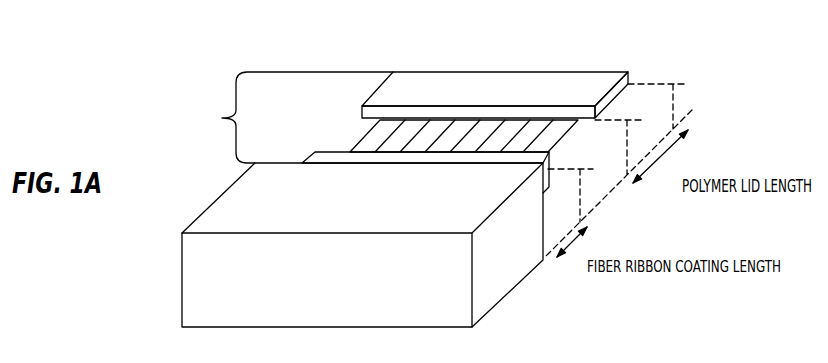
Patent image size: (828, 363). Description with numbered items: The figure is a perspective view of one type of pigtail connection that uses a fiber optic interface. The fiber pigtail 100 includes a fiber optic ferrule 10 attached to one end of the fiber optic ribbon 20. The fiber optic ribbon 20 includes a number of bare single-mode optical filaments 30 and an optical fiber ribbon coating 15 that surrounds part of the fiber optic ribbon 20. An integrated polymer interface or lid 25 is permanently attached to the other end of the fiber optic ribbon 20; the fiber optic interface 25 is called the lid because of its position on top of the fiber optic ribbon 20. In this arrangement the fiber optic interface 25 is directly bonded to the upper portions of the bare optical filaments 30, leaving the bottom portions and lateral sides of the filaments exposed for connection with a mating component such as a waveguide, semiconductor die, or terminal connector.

The fiber pigtail 100 is at (193, 81).
The fiber optic ferrule 10 is at (192, 278).
The optical fiber ribbon coating 15 is at (318, 159).
The fiber optic ribbon 20 is at (295, 117).
The fiber optic interface 25 is at (383, 93).
The bare single-mode optical filaments 30 is at (374, 134).